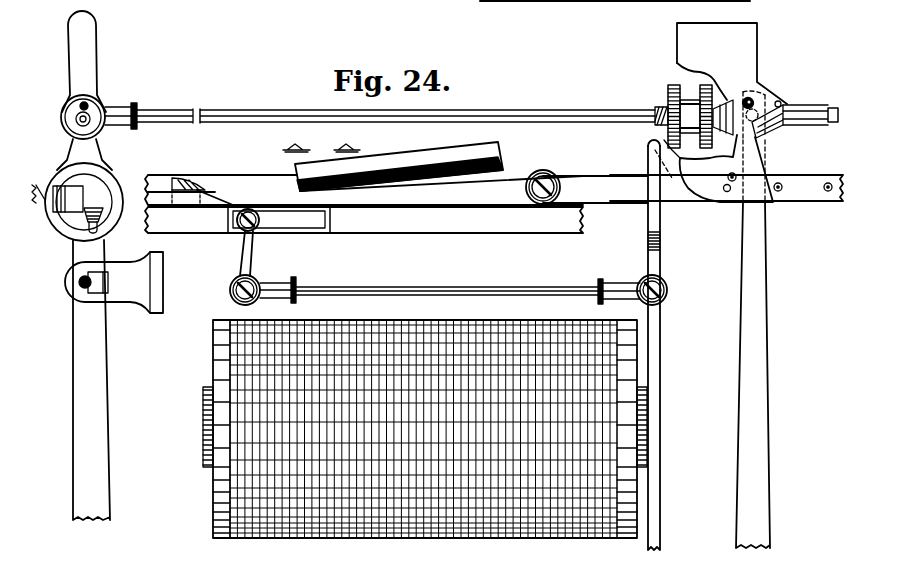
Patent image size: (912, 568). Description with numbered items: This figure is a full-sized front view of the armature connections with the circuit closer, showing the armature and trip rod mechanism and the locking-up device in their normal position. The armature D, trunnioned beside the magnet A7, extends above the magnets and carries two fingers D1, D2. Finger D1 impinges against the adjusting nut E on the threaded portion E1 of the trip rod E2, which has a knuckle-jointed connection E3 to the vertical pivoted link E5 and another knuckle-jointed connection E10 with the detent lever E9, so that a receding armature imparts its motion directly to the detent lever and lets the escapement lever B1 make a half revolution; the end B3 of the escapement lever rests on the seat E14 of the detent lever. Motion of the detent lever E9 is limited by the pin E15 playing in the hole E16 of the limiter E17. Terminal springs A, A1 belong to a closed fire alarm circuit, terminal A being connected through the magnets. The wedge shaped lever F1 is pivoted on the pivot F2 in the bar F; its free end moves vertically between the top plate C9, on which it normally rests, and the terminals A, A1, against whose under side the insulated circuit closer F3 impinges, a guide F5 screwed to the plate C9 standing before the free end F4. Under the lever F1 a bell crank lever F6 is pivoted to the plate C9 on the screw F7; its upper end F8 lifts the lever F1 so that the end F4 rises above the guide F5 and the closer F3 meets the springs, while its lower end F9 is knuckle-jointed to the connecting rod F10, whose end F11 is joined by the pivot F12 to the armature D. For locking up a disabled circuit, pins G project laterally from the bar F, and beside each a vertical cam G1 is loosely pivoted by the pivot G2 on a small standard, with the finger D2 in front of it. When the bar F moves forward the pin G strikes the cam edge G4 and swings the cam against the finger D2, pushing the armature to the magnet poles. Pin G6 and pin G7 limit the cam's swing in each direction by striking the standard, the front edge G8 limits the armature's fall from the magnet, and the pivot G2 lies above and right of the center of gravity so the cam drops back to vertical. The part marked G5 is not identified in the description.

The detent lever E9 is at (84, 265).
The knuckle jointed connection E10 is at (94, 101).
The escapement lever B1 is at (38, 184).
The end of the escapement lever B3 is at (74, 193).
The seat of the detent lever E14 is at (98, 213).
The limiter E17 is at (114, 282).
The pin E15 is at (79, 281).
The hole of the limiter E16 is at (90, 288).
The trip rod E2 is at (507, 112).
The threaded portion of the trip rod E1 is at (655, 112).
The adjusting nut E is at (666, 88).
The knuckle-jointed connection E3 is at (775, 131).
The vertical cam or block G1 is at (732, 81).
The pivot G2 is at (754, 100).
The pin G7 is at (782, 104).
The plate G5 is at (700, 195).
The front edge of the cam G8 is at (685, 159).
The pin G6 is at (736, 178).
The edge of the cam G4 is at (780, 192).
The small pin G is at (828, 192).
The vertical pivoted link E5 is at (753, 375).
The armature D is at (661, 368).
The armature finger D1 is at (648, 141).
The armature finger D2 is at (648, 158).
The wedge shaped lever F1 is at (364, 190).
The top plate C9 is at (364, 220).
The bar F is at (595, 189).
The guide F5 is at (188, 180).
The free end F4 is at (209, 198).
The insulated metallic circuit closer F3 is at (399, 166).
The terminal spring A is at (296, 141).
The terminal spring A1 is at (347, 139).
The pivot F2 is at (553, 177).
The upper end of the bell crank lever F8 is at (279, 220).
The bell crank lever F6 is at (258, 220).
The screw F7 is at (244, 229).
The lower end of the bell crank lever F9 is at (232, 283).
The connecting rod F10 is at (396, 290).
The end of the connecting rod F11 is at (662, 283).
The pivot F12 is at (661, 296).
The magnet A7 is at (425, 429).